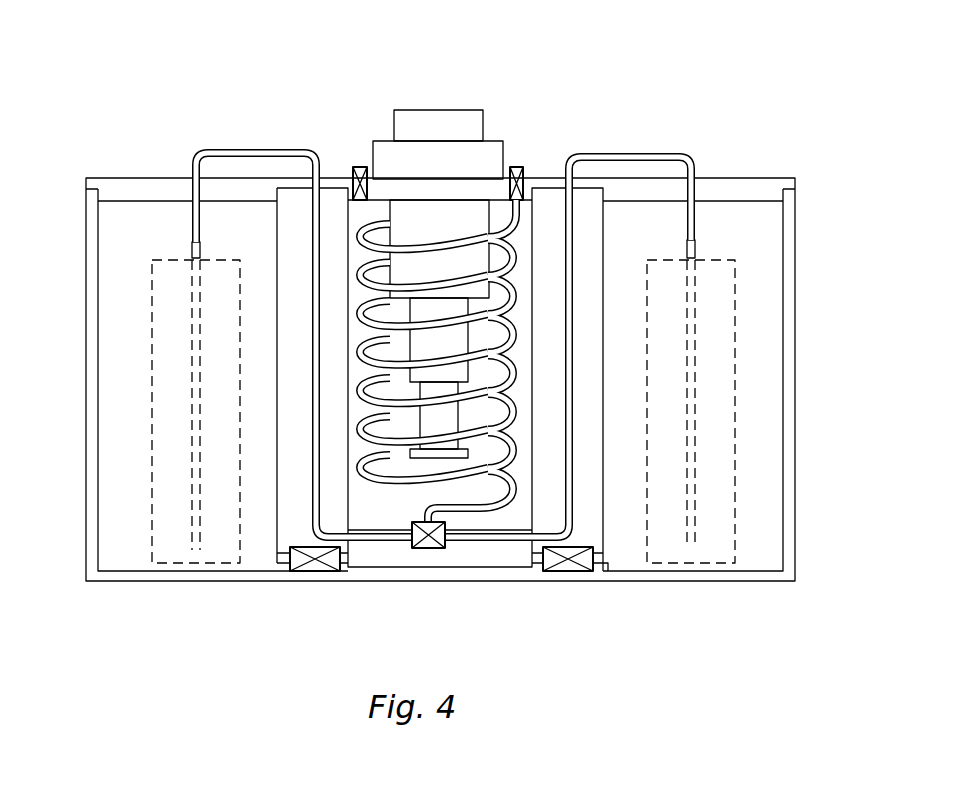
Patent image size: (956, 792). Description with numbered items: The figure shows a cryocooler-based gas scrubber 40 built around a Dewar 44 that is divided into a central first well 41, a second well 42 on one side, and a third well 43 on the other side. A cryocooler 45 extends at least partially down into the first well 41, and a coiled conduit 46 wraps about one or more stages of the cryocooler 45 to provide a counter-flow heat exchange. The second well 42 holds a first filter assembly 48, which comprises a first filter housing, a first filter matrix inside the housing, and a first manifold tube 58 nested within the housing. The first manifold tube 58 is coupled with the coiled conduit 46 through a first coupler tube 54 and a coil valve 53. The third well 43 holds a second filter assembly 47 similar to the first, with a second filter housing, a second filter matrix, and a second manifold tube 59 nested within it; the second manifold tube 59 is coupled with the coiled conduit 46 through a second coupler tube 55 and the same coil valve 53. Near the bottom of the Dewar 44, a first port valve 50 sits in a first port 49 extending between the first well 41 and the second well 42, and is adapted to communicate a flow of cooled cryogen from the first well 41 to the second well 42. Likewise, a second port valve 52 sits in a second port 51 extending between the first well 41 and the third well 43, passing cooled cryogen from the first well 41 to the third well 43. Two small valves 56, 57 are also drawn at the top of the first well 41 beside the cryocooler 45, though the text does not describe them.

The scrubber 40 is at (603, 62).
The first well 41 is at (403, 558).
The second well 42 is at (115, 558).
The third well 43 is at (755, 555).
The Dewar 44 is at (788, 250).
The cryocooler 45 is at (438, 108).
The coiled conduit 46 is at (445, 244).
The second filter assembly 47 is at (735, 402).
The first filter assembly 48 is at (152, 400).
The first port 49 is at (280, 562).
The first port valve 50 is at (328, 572).
The second port 51 is at (603, 560).
The second port valve 52 is at (567, 573).
The coil valve 53 is at (423, 550).
The first coupler tube 54 is at (310, 343).
The second coupler tube 55 is at (562, 348).
The first top valve 56 is at (357, 165).
The second top valve 57 is at (520, 165).
The first manifold tube 58 is at (190, 277).
The second manifold tube 59 is at (693, 277).